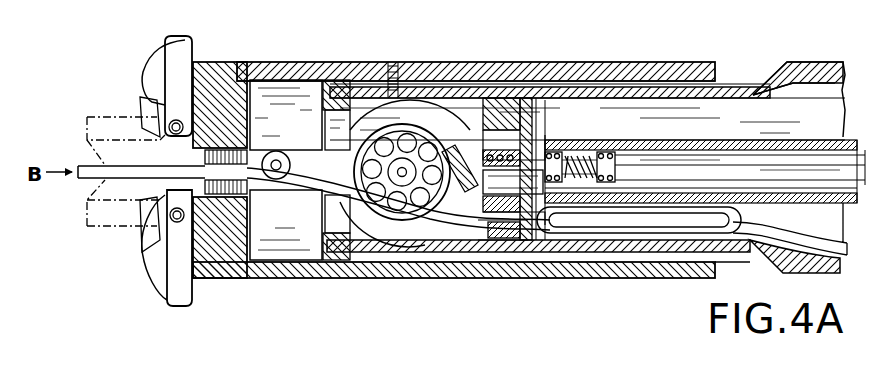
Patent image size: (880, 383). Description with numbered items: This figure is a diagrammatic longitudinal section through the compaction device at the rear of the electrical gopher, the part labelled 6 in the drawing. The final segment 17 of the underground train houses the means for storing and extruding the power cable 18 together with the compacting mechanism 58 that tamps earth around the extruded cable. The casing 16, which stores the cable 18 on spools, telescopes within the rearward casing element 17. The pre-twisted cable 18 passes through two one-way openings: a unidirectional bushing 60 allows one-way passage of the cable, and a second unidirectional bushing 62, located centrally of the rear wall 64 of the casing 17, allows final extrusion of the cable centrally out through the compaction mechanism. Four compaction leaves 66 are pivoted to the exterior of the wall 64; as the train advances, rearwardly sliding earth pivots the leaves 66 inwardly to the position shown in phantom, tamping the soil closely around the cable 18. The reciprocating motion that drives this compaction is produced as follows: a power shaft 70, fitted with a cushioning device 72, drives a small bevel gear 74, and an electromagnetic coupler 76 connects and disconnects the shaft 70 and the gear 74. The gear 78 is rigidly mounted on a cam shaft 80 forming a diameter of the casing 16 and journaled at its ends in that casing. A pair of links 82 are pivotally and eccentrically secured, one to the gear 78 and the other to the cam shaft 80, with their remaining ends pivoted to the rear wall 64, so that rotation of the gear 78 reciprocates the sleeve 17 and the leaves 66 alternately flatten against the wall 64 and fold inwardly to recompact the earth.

The clamp 6 is at (97, 45).
The casing 16 is at (802, 63).
The final segment 17 is at (684, 70).
The power cable 18 is at (80, 165).
The compacting mechanism 58 is at (140, 265).
The unidirectional bushing 60 is at (503, 236).
The second unidirectional bushing 62 is at (250, 208).
The rear wall 64 is at (217, 272).
The compaction leaves 66 is at (147, 70).
The power shaft 70 is at (818, 163).
The cushioning device 72 is at (598, 148).
The small bevel gear 74 is at (453, 182).
The electromagnetic coupler 76 is at (533, 136).
The gear 78 is at (405, 173).
The cam shaft 80 is at (402, 176).
The links 82 is at (310, 157).